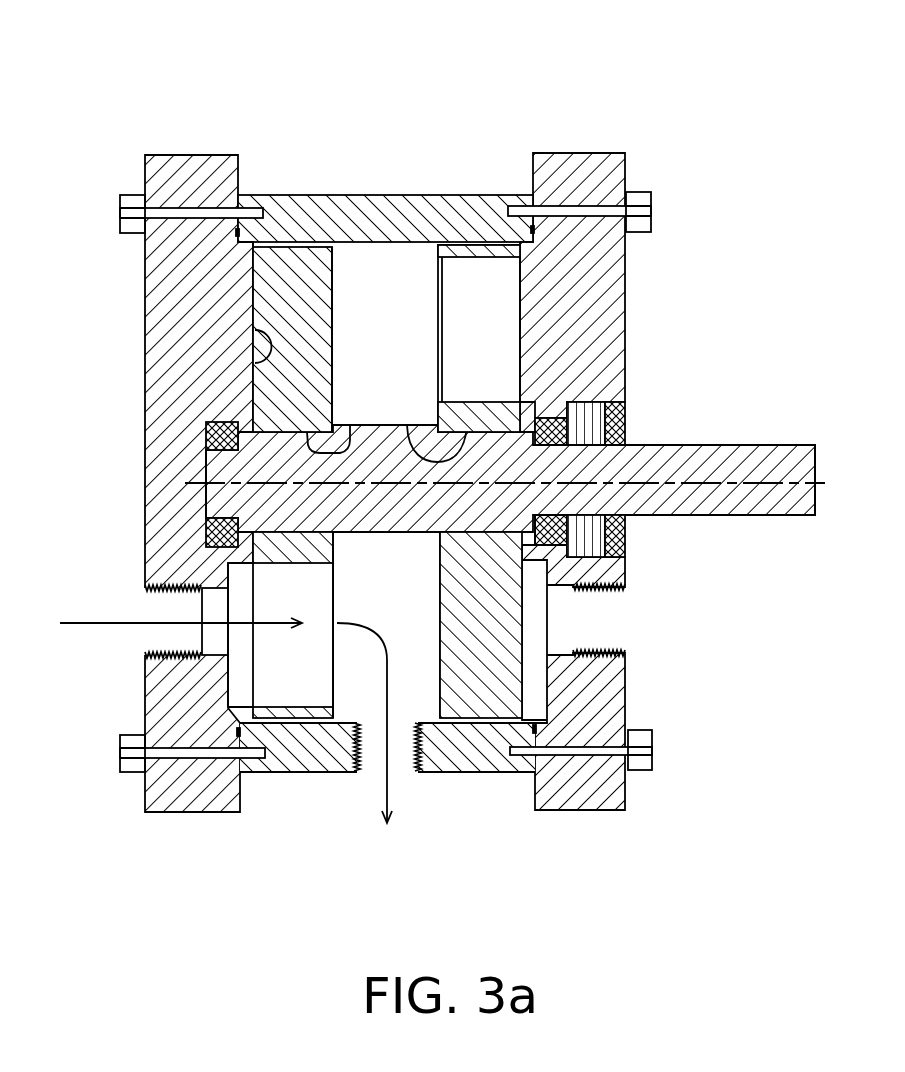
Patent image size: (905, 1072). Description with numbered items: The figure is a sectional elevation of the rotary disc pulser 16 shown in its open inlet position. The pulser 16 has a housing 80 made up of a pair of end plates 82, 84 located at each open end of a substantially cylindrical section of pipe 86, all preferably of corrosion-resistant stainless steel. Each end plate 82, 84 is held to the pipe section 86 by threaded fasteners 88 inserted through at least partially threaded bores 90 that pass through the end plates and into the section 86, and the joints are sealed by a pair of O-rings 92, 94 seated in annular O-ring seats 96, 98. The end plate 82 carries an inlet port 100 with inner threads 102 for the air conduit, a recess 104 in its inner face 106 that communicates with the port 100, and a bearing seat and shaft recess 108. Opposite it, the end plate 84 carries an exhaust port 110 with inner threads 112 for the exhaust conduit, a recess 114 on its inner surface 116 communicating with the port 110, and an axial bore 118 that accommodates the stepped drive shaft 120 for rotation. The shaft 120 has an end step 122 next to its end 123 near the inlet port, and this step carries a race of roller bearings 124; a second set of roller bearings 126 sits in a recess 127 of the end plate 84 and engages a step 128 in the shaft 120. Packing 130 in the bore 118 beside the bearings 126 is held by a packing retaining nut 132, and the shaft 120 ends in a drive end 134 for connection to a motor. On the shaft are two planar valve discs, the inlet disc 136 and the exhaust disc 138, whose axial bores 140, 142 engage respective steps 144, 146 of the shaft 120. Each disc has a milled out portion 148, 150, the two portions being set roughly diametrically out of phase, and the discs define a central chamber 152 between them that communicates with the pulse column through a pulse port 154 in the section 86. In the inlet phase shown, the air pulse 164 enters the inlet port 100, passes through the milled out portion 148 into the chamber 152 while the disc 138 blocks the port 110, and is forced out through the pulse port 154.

The rotary disc pulser 16 is at (423, 100).
The housing 80 is at (722, 296).
The end plate 82 is at (145, 327).
The end plate 84 is at (627, 303).
The section of pipe 86 is at (355, 195).
The threaded fastener 88 is at (653, 212).
The at least partially threaded bore 90 is at (200, 183).
The O-ring 92 is at (237, 237).
The O-ring 94 is at (533, 227).
The annular O-ring seat 96 is at (236, 239).
The annular O-ring seat 98 is at (627, 253).
The inlet port 100 is at (145, 655).
The inner threads 102 is at (193, 595).
The recess 104 is at (240, 665).
The inner face 106 is at (253, 335).
The bearing seat and shaft recess 108 is at (207, 510).
The exhaust port 110 is at (600, 622).
The inner threads 112 is at (593, 597).
The recess 114 is at (535, 673).
The inner surface 116 is at (520, 355).
The axial bore 118 is at (633, 440).
The stepped drive shaft 120 is at (812, 445).
The end step 122 is at (207, 470).
The end 123 is at (207, 490).
The race of roller bearings 124 is at (207, 514).
The roller bearings 126 is at (575, 575).
The recess 127 is at (530, 397).
The step 128 is at (540, 523).
The packing 130 is at (600, 400).
The packing retaining nut 132 is at (627, 417).
The drive end 134 is at (797, 515).
The inlet disc 136 is at (333, 310).
The exhaust disc 138 is at (438, 290).
The axial bore 140 is at (350, 425).
The axial bore 142 is at (407, 425).
The step 144 is at (327, 535).
The step 146 is at (440, 533).
The milled out portion 148 is at (311, 625).
The milled out portion 150 is at (437, 338).
The central chamber 152 is at (386, 625).
The pulse port 154 is at (408, 750).
The air pulse 164 is at (172, 640).